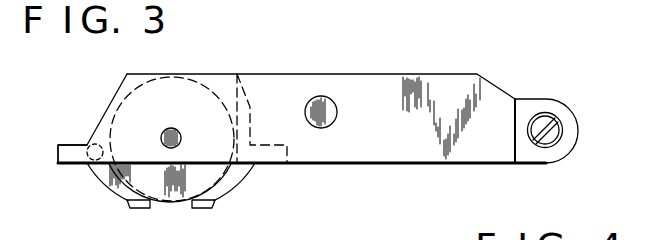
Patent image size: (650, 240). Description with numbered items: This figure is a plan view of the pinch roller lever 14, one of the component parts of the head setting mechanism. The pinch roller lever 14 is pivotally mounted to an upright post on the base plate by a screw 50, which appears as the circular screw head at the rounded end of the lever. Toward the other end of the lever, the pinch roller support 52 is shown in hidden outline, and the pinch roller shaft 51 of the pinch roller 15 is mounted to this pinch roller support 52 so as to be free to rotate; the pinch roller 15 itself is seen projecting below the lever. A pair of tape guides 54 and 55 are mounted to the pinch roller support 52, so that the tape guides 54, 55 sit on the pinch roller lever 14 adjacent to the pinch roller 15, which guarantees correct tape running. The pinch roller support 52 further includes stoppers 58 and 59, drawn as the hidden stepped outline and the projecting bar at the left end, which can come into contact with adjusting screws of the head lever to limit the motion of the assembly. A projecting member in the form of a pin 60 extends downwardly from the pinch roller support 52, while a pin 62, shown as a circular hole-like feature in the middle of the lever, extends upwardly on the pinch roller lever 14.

The pinch roller lever 14 is at (444, 71).
The pinch roller 15 is at (170, 201).
The screw 50 is at (536, 117).
The pinch roller shaft 51 is at (170, 128).
The pinch roller support 52 is at (216, 82).
The tape guide 54 is at (199, 208).
The tape guide 55 is at (140, 208).
The stopper 58 is at (273, 152).
The stopper 59 is at (69, 165).
The pin 60 is at (85, 143).
The pin 62 is at (337, 112).